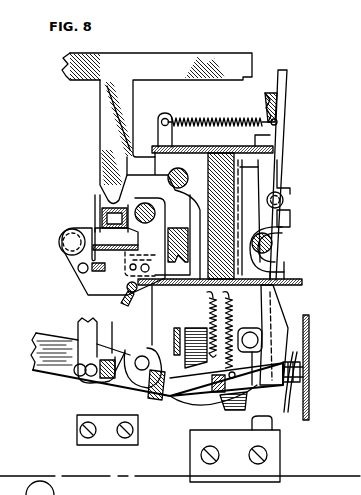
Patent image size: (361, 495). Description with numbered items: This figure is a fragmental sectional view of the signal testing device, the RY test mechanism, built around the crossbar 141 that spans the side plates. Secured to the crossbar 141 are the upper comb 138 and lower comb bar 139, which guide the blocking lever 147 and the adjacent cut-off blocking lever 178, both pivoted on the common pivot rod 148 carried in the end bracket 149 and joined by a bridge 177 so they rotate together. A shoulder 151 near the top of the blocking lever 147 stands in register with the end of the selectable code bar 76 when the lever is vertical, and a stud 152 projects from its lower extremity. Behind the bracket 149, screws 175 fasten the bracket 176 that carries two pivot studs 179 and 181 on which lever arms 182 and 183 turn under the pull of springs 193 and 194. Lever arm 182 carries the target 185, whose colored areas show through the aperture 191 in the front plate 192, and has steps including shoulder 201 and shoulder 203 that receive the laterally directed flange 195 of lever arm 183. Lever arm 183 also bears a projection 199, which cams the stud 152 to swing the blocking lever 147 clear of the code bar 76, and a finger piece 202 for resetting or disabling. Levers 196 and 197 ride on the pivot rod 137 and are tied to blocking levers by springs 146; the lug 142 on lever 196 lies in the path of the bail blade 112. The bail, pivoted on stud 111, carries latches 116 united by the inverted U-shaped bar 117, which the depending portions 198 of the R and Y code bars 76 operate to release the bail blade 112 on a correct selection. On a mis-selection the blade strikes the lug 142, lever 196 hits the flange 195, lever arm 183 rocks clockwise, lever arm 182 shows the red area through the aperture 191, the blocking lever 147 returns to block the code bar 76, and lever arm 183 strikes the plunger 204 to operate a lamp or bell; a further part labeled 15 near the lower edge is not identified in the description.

The code bar 76 is at (133, 57).
The depending portion 198 is at (103, 127).
The pivot rod 137 is at (150, 165).
The spring 146 is at (234, 117).
The lever 196 is at (212, 143).
The blocking lever 147 is at (282, 106).
The shoulder 151 is at (268, 95).
The upper comb 138 is at (258, 146).
The cross bar 141 is at (258, 165).
The blocking lever 178 is at (243, 298).
The screw 175 is at (247, 185).
The bridge 177 is at (284, 205).
The bracket 176 is at (276, 227).
The pivot rod 148 is at (273, 243).
The bracket 149 is at (273, 270).
The lower comb bar 139 is at (300, 284).
The lever 197 is at (107, 190).
The latch 116 is at (98, 206).
The inverted U-shaped bar 117 is at (99, 216).
The bail blade 112 is at (80, 240).
The projection 142 is at (147, 239).
The spring 194 is at (206, 296).
The flange 195 is at (212, 334).
The spring 193 is at (280, 335).
The stud 152 is at (262, 345).
The shoulder 201 is at (143, 365).
The shoulder 203 is at (157, 364).
The pivot stud 179 is at (145, 392).
The stud 111 is at (112, 397).
The lever arm 183 is at (252, 393).
The lever arm 182 is at (140, 400).
The pivot stud 181 is at (176, 442).
The plunger 204 is at (275, 430).
The front plate 192 is at (310, 393).
The target 185 is at (290, 412).
The projection 199 is at (290, 345).
The aperture 191 is at (301, 365).
The finger piece 202 is at (304, 377).
The base 15 is at (180, 478).